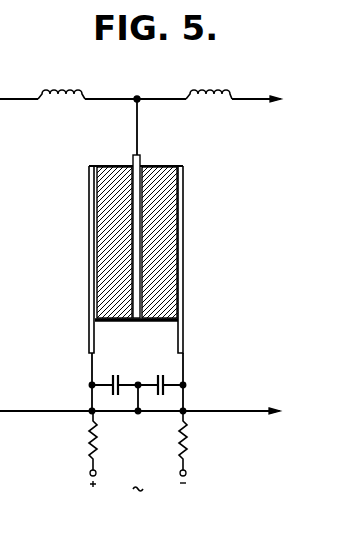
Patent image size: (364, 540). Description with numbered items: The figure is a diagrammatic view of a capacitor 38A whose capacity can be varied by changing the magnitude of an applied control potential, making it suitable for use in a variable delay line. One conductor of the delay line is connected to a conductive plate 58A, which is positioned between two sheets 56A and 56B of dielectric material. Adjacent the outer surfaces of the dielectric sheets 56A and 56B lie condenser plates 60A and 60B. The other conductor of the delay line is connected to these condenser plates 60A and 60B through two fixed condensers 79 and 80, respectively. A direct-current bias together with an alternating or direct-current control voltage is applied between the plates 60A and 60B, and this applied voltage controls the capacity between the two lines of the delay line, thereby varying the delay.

The capacitor 38A is at (139, 248).
The sheet of dielectric material 56A is at (110, 189).
The sheet of dielectric material 56B is at (167, 185).
The conductive plate 58A is at (143, 172).
The condenser plate 60A is at (92, 292).
The condenser plate 60B is at (184, 277).
The fixed condenser 79 is at (106, 365).
The fixed condenser 80 is at (151, 366).